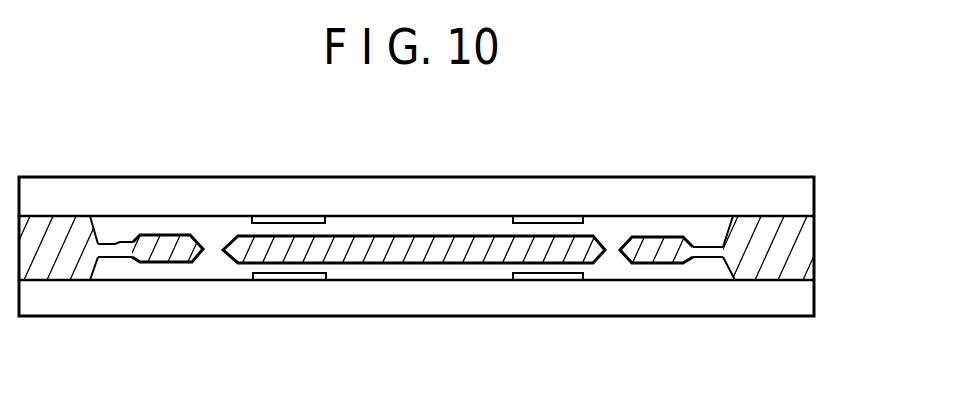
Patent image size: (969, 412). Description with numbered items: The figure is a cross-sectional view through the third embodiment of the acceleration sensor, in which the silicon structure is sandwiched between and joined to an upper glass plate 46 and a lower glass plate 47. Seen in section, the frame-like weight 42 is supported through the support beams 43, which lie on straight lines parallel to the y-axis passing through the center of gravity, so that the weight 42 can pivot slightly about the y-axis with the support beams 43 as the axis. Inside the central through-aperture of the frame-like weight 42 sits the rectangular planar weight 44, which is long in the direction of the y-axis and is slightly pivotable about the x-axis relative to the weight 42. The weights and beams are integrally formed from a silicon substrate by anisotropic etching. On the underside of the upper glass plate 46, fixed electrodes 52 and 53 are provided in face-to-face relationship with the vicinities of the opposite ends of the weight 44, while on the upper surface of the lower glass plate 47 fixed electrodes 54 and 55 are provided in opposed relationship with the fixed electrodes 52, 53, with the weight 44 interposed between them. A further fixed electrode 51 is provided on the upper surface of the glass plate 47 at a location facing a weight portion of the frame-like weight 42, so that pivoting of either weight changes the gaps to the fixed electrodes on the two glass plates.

The frame-like weight 42 is at (178, 236).
The support beams 43 is at (125, 242).
The planar weight 44 is at (403, 246).
The upper glass plate 46 is at (710, 190).
The lower glass plate 47 is at (652, 305).
The fixed electrode 51 is at (793, 277).
The fixed electrode 52 is at (553, 222).
The fixed electrode 53 is at (295, 216).
The fixed electrode 54 is at (547, 277).
The fixed electrode 55 is at (293, 280).